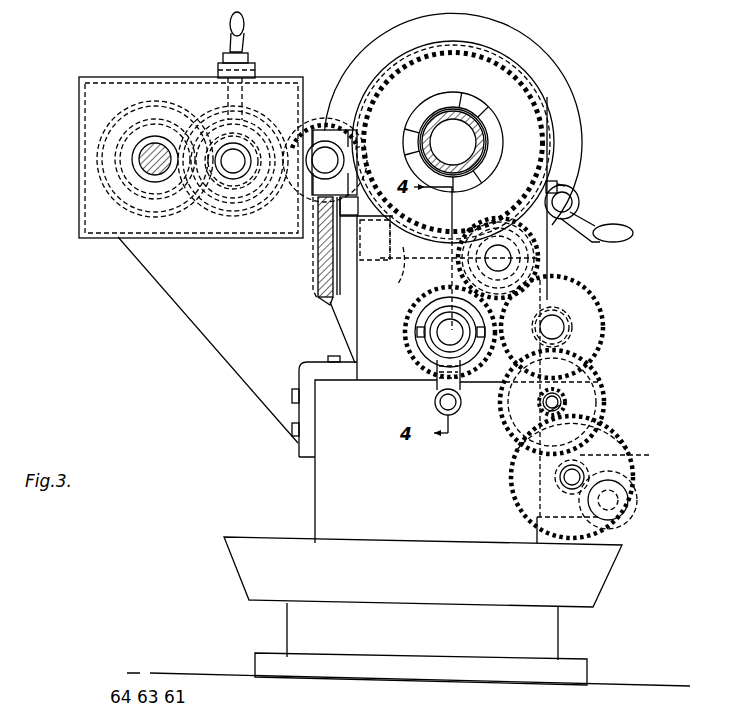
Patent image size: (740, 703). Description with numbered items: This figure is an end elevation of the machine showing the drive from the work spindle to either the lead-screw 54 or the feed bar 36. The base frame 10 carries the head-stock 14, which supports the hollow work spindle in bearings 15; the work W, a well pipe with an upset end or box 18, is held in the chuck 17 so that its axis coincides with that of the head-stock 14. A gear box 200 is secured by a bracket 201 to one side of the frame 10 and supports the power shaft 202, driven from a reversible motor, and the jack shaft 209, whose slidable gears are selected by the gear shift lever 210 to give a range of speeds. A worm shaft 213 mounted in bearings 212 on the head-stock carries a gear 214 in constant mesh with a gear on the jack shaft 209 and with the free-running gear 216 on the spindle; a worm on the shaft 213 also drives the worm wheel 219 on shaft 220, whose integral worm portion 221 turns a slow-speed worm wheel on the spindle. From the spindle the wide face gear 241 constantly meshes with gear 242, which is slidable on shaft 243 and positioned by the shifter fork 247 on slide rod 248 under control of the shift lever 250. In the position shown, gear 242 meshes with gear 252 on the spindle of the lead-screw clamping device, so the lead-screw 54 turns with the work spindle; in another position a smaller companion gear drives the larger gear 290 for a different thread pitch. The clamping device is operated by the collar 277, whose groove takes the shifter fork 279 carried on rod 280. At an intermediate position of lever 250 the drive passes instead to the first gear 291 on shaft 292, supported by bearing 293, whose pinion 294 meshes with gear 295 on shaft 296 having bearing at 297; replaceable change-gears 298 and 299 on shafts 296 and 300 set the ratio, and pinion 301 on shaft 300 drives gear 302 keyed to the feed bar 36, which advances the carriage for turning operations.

The gear box 200 is at (77, 108).
The power shaft 202 is at (148, 158).
The jack shaft 209 is at (232, 150).
The gear shift lever 210 is at (240, 32).
The bearings 212 is at (325, 110).
The worm shaft 213 is at (325, 118).
The gear 214 is at (318, 125).
The gear 216 is at (490, 57).
The bearings 15 is at (478, 115).
The head-stock 14 is at (478, 119).
The upset end or box 18 is at (511, 122).
The work W is at (487, 128).
The chuck 17 is at (582, 108).
The wide face gear 241 is at (547, 133).
The shifter fork 247 is at (573, 178).
The slide rod 248 is at (572, 202).
The shift lever 250 is at (622, 228).
The worm wheel 219 is at (318, 250).
The gear 242 is at (535, 258).
The shaft 243 is at (502, 270).
The shaft 220 is at (385, 262).
The worm portion 221 is at (410, 280).
The bracket 201 is at (218, 321).
The gear 252 is at (428, 344).
The gear 290 is at (428, 344).
The lead-screw 54 is at (435, 355).
The collar 277 is at (413, 402).
The shifter fork 279 is at (413, 402).
The rod 280 is at (440, 418).
The base frame 10 is at (327, 490).
The gear 291 is at (585, 327).
The shaft 292 is at (585, 327).
The bearing 293 is at (585, 327).
The pinion 294 is at (573, 347).
The bearing 297 is at (587, 377).
The shaft 296 is at (582, 402).
The gear 295 is at (582, 402).
The change-gear 298 is at (547, 413).
The shaft 300 is at (575, 477).
The change-gear 299 is at (575, 477).
The pinion 301 is at (588, 457).
The feed bar 36 is at (622, 497).
The gear 302 is at (639, 500).